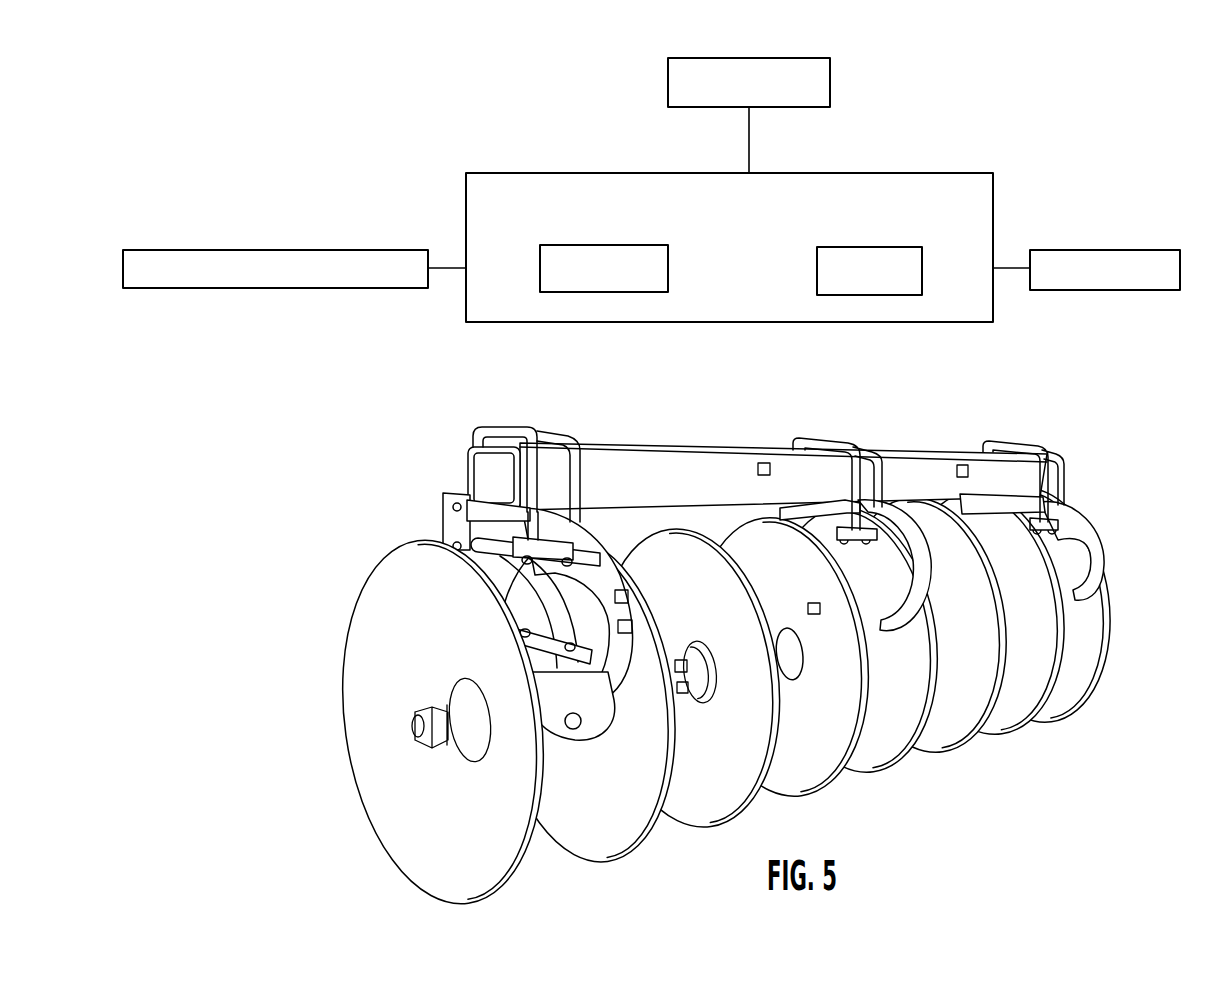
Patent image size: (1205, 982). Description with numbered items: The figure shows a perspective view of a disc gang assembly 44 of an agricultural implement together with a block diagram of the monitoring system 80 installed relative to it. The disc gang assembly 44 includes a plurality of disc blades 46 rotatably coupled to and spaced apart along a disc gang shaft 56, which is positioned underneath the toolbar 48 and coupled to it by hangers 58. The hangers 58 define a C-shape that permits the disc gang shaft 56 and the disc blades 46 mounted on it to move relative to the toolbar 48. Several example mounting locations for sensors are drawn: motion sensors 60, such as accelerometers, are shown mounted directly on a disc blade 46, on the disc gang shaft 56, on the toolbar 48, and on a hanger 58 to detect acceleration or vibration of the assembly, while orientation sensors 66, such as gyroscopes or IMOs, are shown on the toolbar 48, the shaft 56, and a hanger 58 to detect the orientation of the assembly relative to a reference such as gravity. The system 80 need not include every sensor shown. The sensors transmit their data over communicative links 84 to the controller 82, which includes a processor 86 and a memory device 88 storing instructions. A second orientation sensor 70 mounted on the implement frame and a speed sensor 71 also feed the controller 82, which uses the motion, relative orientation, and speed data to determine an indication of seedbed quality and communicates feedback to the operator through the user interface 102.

The disc gang assembly 44 is at (428, 431).
The disc blade 46 is at (420, 888).
The toolbar 48 is at (703, 452).
The disc gang shaft 56 is at (465, 752).
The hanger 58 is at (1085, 511).
The motion sensor 60 is at (764, 463).
The orientation sensor 66 is at (962, 465).
The second orientation sensor 70 is at (170, 250).
The speed sensor 71 is at (1090, 290).
The system 80 is at (449, 81).
The controller 82 is at (522, 173).
The communicative link 84 is at (749, 144).
The processor 86 is at (596, 245).
The memory device 88 is at (870, 247).
The user interface 102 is at (718, 58).